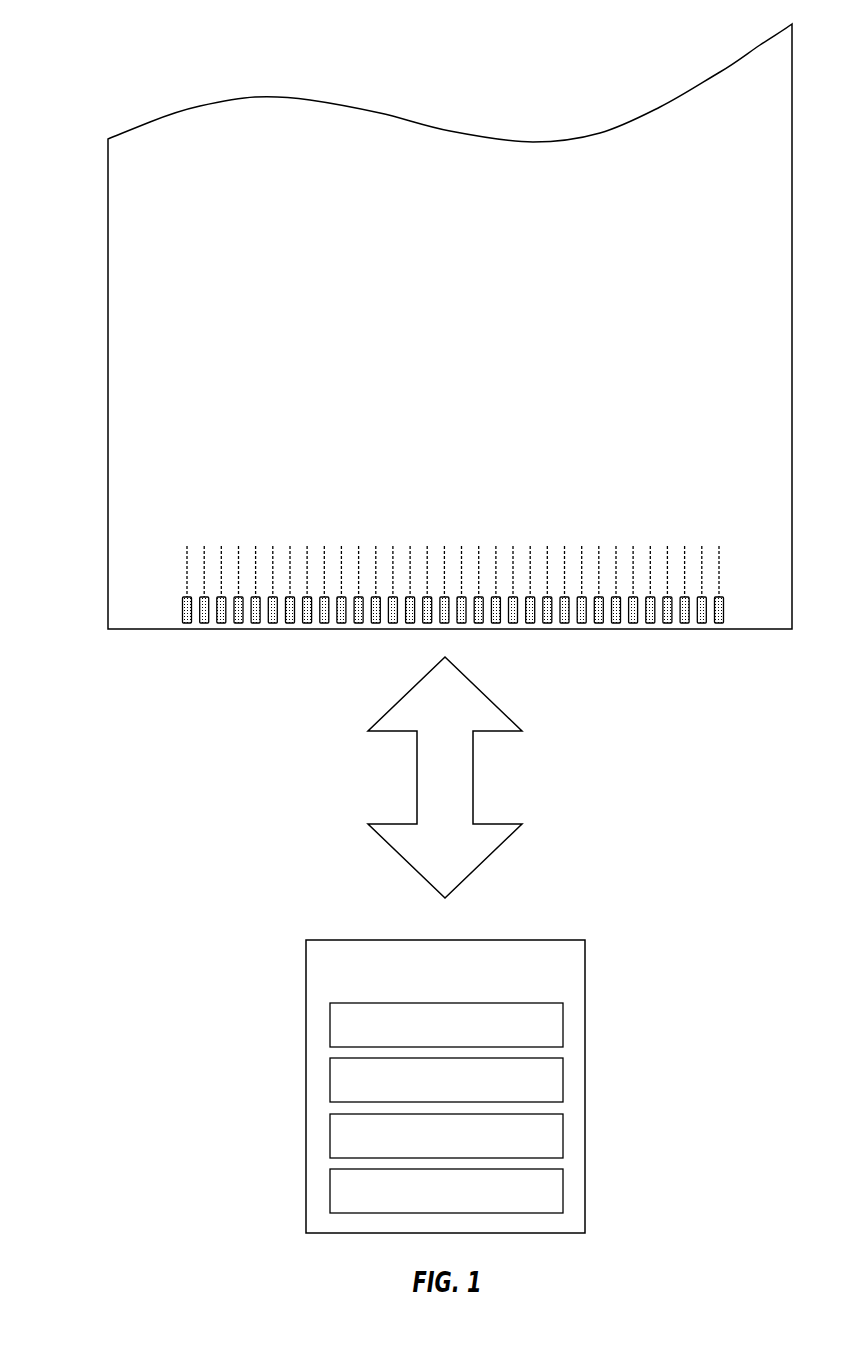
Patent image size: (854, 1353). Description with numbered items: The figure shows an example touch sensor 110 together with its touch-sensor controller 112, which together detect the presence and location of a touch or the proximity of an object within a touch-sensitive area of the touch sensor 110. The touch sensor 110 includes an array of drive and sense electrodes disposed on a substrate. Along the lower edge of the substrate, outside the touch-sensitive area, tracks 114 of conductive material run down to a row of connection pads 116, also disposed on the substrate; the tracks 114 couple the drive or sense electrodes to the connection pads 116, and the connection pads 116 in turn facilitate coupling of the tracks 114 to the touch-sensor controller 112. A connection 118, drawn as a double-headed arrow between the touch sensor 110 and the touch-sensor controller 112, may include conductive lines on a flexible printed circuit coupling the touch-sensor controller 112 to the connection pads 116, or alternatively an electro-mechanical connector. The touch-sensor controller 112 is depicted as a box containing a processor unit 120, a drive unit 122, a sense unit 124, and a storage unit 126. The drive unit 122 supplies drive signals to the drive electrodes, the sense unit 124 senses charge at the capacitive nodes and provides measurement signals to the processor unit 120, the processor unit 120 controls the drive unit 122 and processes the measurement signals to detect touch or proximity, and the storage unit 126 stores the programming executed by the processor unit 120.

The touch sensor 110 is at (135, 318).
The touch-sensor controller 112 is at (306, 1090).
The tracks 114 is at (186, 590).
The connection pads 116 is at (181, 611).
The connection 118 is at (412, 784).
The processor unit 120 is at (429, 1036).
The drive unit 122 is at (429, 1091).
The sense unit 124 is at (429, 1147).
The storage unit 126 is at (429, 1202).